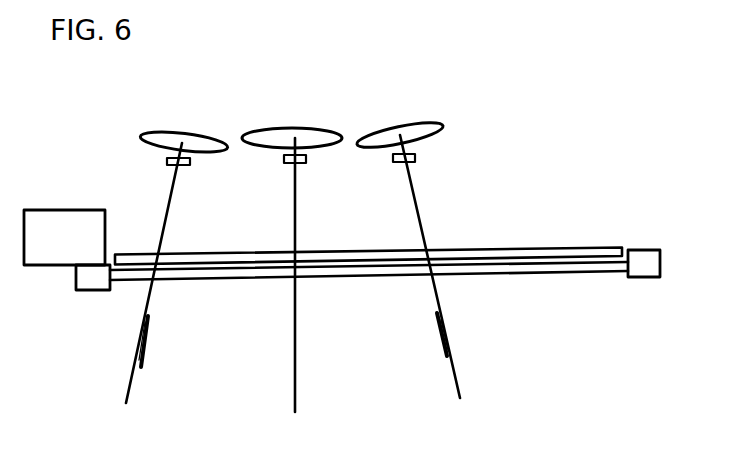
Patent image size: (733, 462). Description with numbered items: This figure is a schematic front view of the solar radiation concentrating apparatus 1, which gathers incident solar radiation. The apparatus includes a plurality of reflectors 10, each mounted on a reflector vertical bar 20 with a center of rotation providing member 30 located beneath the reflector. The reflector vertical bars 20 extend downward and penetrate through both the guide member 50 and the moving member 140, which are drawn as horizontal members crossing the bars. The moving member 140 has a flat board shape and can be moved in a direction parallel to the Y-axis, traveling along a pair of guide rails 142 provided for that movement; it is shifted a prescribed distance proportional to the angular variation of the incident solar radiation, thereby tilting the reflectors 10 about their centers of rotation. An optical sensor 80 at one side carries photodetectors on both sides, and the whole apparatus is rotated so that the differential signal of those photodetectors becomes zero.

The solar radiation concentrating apparatus 1 is at (517, 132).
The reflector 10 is at (135, 127).
The reflector vertical bar 20 is at (165, 202).
The center of rotation providing member 30 is at (422, 157).
The guide member 50 is at (567, 243).
The optical sensor 80 is at (57, 207).
The moving member 140 is at (547, 272).
The guide rail 142 is at (642, 245).